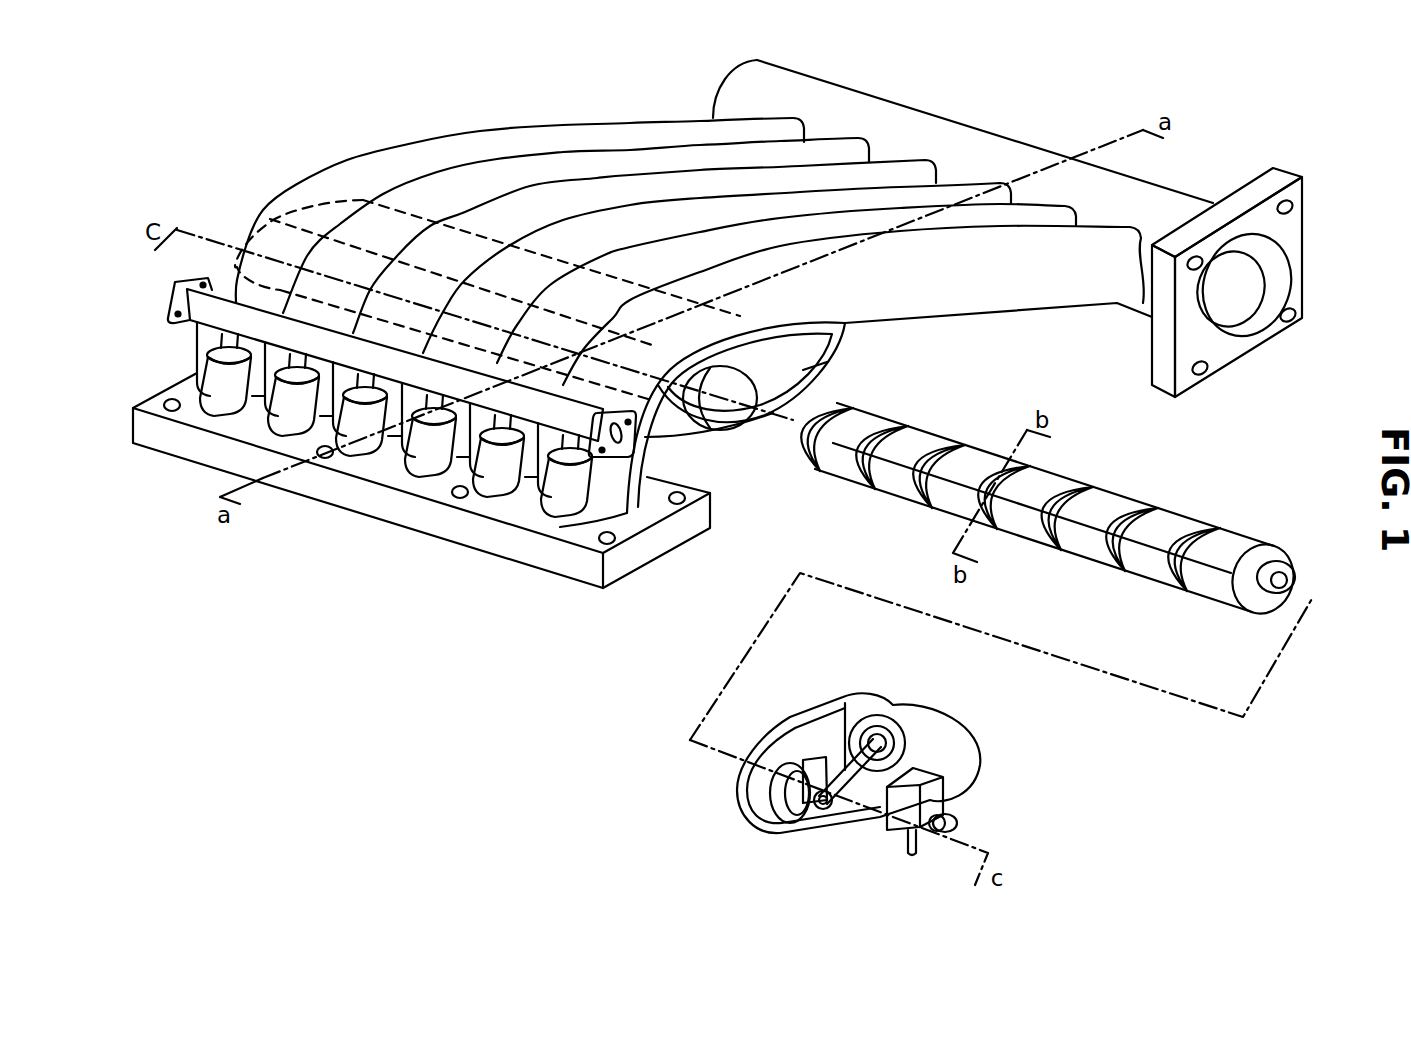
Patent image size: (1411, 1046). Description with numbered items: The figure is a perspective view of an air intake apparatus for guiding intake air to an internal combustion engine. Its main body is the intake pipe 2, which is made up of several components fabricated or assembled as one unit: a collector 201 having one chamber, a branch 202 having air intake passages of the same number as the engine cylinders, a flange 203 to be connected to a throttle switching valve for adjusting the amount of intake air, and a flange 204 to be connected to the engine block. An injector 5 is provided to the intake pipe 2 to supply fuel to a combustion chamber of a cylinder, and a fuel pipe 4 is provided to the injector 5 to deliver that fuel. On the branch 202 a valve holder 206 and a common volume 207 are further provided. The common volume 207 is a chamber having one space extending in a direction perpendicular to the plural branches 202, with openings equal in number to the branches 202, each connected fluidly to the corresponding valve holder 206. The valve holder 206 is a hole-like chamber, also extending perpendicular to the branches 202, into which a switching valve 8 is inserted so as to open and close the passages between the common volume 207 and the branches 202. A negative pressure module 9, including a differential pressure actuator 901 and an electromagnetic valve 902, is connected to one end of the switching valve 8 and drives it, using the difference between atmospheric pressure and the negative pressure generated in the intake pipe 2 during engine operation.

The intake pipe 2 is at (581, 86).
The collector 201 is at (975, 128).
The branch 202 is at (1040, 297).
The flange 203 is at (1296, 176).
The flange 204 is at (630, 577).
The valve holder 206 is at (717, 417).
The common volume 207 is at (838, 348).
The fuel pipe 4 is at (540, 413).
The injector 5 is at (567, 490).
The switching valve 8 is at (1033, 543).
The negative pressure module 9 is at (901, 766).
The differential pressure actuator 901 is at (928, 707).
The electromagnetic valve 902 is at (947, 788).